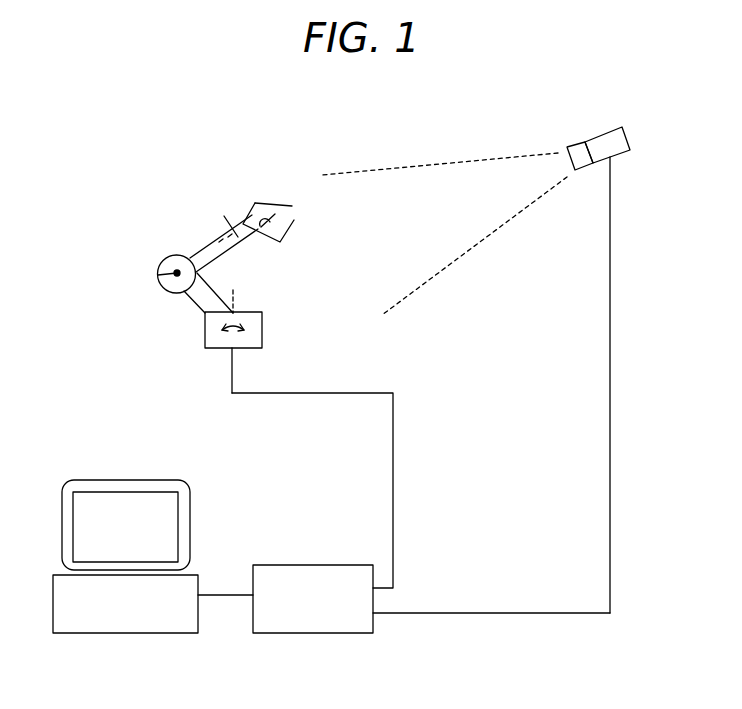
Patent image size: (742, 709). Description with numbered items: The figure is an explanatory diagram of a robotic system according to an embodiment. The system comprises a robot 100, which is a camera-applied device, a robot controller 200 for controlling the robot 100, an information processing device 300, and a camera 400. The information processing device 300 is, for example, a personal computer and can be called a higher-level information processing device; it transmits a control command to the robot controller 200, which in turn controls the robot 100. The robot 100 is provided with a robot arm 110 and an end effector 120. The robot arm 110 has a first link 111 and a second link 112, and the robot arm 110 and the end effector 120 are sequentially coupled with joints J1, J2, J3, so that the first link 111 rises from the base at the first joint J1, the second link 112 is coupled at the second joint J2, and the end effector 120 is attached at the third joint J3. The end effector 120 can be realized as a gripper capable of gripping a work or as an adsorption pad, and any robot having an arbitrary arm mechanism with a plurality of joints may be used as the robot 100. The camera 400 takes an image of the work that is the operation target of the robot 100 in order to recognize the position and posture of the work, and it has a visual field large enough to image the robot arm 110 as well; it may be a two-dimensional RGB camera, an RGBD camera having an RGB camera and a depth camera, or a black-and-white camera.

The robot 100 is at (102, 168).
The robot arm 110 is at (82, 207).
The first link 111 is at (194, 303).
The second link 112 is at (200, 247).
The end effector 120 is at (272, 203).
The joint J1 is at (237, 299).
The joint J2 is at (158, 278).
The joint J3 is at (230, 218).
The robot controller 200 is at (293, 565).
The information processing device 300 is at (95, 480).
The camera 400 is at (625, 137).